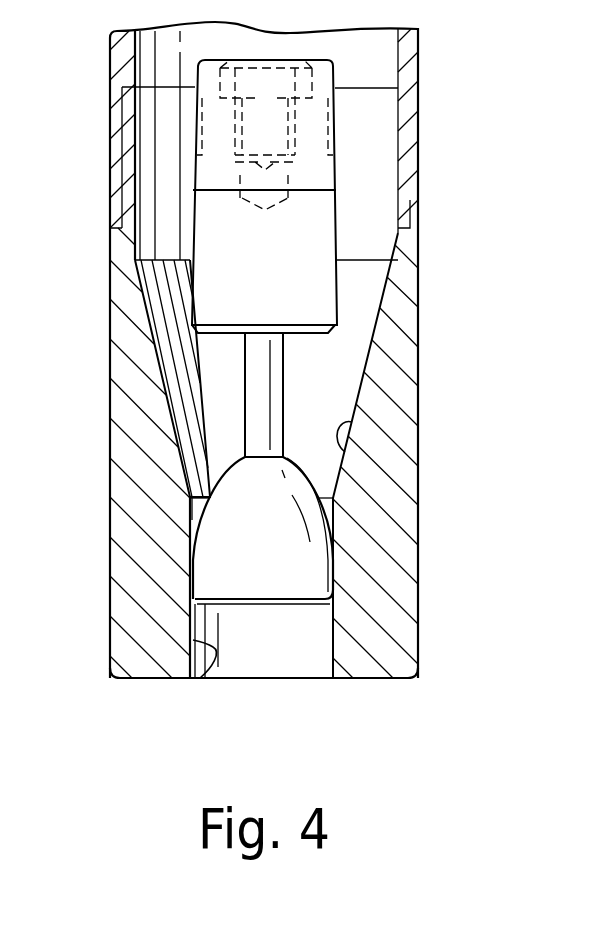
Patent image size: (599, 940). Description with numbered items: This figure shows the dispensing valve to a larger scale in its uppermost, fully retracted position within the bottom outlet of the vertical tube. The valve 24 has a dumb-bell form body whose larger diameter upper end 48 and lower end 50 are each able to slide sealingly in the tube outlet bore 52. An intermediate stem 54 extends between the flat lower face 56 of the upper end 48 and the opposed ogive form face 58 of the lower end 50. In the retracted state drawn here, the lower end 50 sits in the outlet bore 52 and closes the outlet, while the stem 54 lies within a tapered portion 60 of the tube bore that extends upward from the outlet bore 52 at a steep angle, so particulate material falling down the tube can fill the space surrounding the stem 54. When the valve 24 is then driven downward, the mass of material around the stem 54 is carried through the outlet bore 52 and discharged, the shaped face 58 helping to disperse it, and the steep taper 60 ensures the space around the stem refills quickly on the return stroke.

The valve 24 is at (210, 368).
The upper end 48 is at (313, 242).
The lower end 50 is at (273, 563).
The tube outlet bore 52 is at (200, 678).
The intermediate stem 54 is at (257, 405).
The flat lower face 56 is at (310, 332).
The ogive form face 58 is at (207, 522).
The tapered portion 60 is at (347, 452).